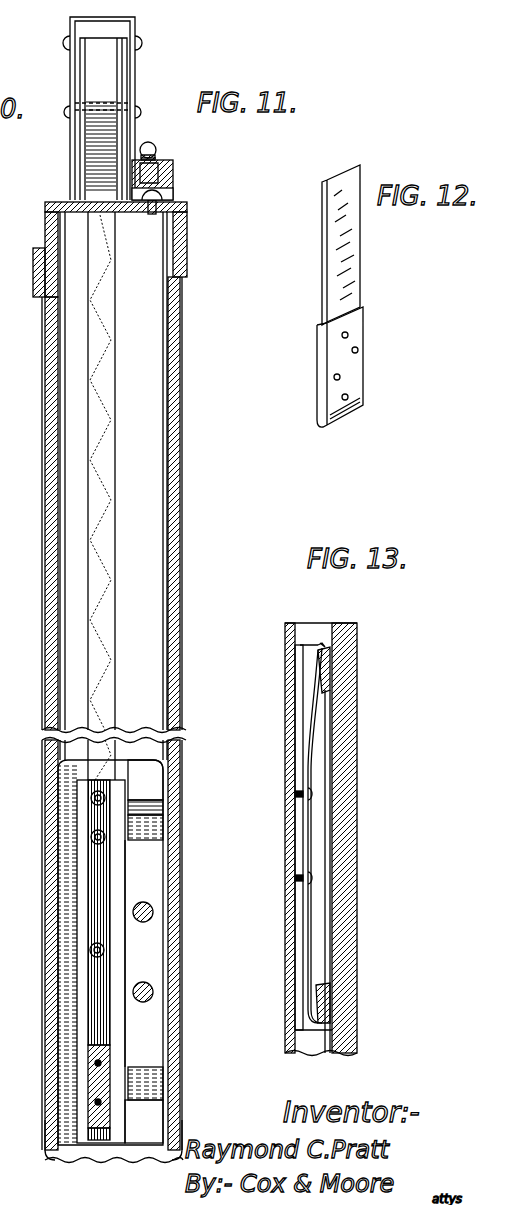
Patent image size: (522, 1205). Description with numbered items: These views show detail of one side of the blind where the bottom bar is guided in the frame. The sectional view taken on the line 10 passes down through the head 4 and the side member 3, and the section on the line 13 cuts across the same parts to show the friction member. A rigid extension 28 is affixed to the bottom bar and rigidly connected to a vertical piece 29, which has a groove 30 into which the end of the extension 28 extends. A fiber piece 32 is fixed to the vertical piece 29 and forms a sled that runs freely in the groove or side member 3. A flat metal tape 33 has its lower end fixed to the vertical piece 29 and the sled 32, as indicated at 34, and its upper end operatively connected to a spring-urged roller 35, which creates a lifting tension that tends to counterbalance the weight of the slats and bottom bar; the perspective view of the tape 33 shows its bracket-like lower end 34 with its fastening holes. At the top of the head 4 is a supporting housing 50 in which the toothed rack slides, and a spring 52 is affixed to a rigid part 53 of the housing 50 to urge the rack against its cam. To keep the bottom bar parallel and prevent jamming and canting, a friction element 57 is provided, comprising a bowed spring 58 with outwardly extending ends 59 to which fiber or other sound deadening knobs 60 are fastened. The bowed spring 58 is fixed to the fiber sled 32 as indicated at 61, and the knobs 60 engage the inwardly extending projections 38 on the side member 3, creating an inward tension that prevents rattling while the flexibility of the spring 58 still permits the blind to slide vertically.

In FIG. 13, the side member 3 is at (285, 640).
In FIG. 11, the head 4 is at (58, 202).
In FIG. 11, the section line 10 is at (98, 30).
In FIG. 11, the section line 13 is at (128, 760).
In FIG. 11, the rigid extension 28 is at (107, 1075).
In FIG. 11, the vertical piece 29 is at (83, 922).
In FIG. 11, the groove 30 is at (115, 870).
In FIG. 11, the fiber piece 32 is at (67, 795).
In FIG. 13, the fiber piece 32 is at (300, 683).
In FIG. 11, the flat metal tape 33 is at (107, 327).
In FIG. 12, the flat metal tape 33 is at (325, 237).
In FIG. 12, the tape fastening 34 is at (333, 358).
In FIG. 11, the roller 35 is at (118, 72).
In FIG. 13, the inward extension 38 is at (357, 628).
In FIG. 11, the supporting housing 50 is at (175, 172).
In FIG. 11, the spring 52 is at (152, 143).
In FIG. 11, the rigid part 53 is at (157, 153).
In FIG. 11, the friction element 57 is at (143, 817).
In FIG. 13, the friction element 57 is at (311, 728).
In FIG. 11, the bowed spring 58 is at (147, 947).
In FIG. 13, the bowed spring 58 is at (308, 760).
In FIG. 11, the outwardly extending end 59 is at (142, 832).
In FIG. 13, the outwardly extending end 59 is at (320, 643).
In FIG. 11, the fiber knob 60 is at (152, 777).
In FIG. 13, the fiber knob 60 is at (330, 665).
In FIG. 11, the spring fastening 61 is at (153, 910).
In FIG. 13, the spring fastening 61 is at (312, 798).